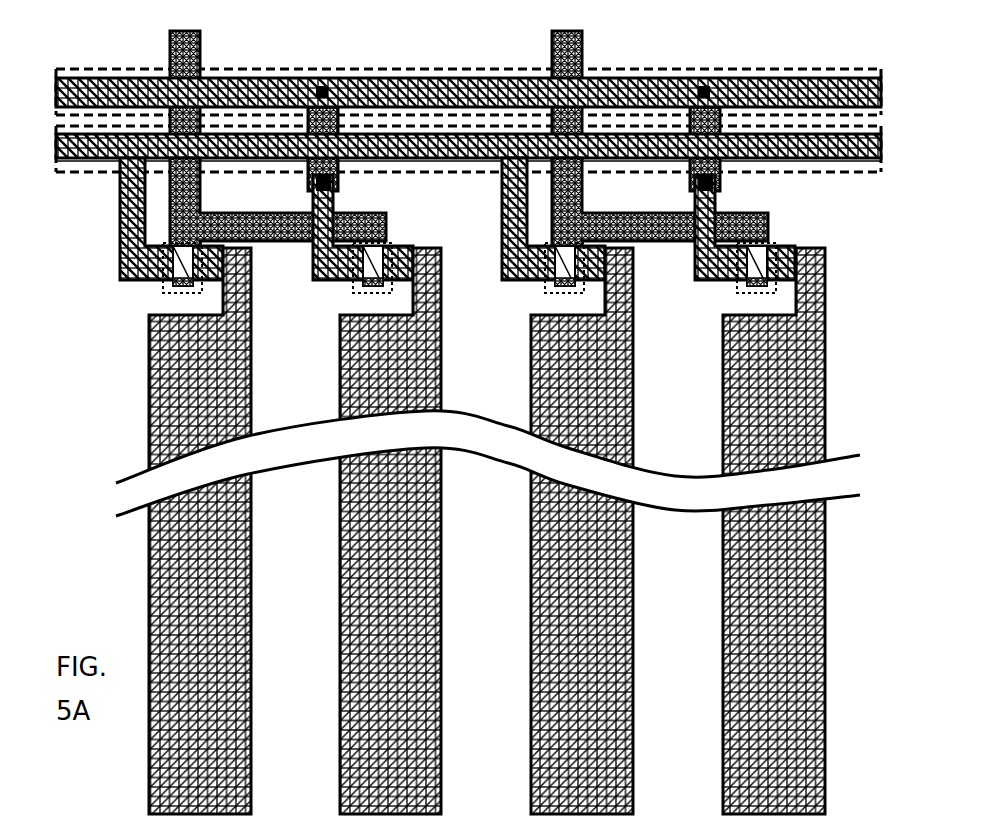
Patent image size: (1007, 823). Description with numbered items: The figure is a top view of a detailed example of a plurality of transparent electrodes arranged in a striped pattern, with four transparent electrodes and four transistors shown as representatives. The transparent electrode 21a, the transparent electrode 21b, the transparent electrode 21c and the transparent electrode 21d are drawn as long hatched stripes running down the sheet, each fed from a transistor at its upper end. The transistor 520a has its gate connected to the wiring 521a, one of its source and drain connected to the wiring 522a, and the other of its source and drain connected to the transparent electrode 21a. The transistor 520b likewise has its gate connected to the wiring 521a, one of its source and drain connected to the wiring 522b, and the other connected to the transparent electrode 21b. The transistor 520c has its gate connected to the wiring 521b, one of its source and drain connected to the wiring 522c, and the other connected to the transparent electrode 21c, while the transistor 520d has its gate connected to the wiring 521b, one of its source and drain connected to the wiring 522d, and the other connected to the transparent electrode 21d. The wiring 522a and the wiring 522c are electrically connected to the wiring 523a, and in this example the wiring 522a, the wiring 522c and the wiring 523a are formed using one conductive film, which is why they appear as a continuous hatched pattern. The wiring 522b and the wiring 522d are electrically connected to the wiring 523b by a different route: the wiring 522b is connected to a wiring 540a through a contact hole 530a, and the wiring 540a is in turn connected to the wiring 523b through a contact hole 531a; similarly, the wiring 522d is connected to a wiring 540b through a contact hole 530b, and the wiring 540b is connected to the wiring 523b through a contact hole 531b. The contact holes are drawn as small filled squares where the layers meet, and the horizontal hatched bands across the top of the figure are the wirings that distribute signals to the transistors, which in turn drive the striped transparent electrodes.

The transparent electrode 21a is at (233, 733).
The transparent electrode 21b is at (410, 733).
The transparent electrode 21c is at (602, 733).
The transparent electrode 21d is at (797, 735).
The transistor 520a is at (192, 190).
The transistor 520b is at (380, 237).
The transistor 520c is at (575, 190).
The transistor 520d is at (762, 236).
The wiring 521a is at (190, 61).
The wiring 521b is at (574, 54).
The wiring 522a is at (112, 247).
The wiring 522b is at (302, 252).
The wiring 522c is at (494, 252).
The wiring 522d is at (685, 252).
The wiring 523a is at (83, 165).
The wiring 523b is at (66, 63).
The contact hole 530a is at (323, 173).
The contact hole 530b is at (708, 180).
The contact hole 531a is at (317, 82).
The contact hole 531b is at (699, 82).
The wiring 540a is at (333, 166).
The wiring 540b is at (712, 167).